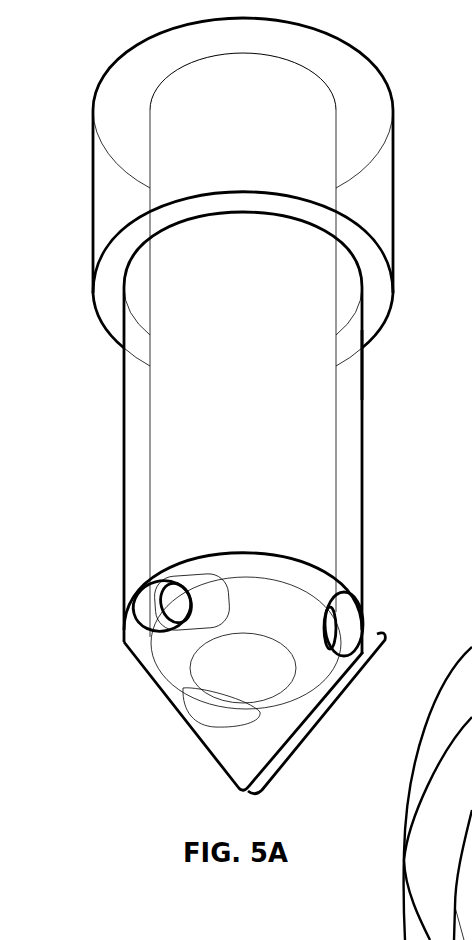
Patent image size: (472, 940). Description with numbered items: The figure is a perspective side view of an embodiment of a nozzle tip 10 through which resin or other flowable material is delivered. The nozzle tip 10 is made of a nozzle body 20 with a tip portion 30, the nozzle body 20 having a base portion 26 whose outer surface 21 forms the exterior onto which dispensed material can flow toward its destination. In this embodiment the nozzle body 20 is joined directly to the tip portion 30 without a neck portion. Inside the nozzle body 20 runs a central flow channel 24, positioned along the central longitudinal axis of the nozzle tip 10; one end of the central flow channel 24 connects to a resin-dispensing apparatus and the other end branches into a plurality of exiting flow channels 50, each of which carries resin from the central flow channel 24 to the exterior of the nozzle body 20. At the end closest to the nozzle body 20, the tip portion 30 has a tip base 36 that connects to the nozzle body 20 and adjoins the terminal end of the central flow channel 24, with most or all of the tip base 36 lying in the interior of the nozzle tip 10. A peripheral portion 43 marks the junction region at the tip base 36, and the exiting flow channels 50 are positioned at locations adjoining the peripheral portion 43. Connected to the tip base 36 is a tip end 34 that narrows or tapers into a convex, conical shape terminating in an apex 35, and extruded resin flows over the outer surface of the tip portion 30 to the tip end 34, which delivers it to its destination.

The nozzle tip 10 is at (111, 30).
The nozzle body 20 is at (92, 200).
The outer surface 21 is at (363, 370).
The central flow channel 24 is at (168, 413).
The base portion 26 is at (405, 115).
The tip portion 30 is at (135, 637).
The tip end 34 is at (330, 716).
The apex 35 is at (249, 797).
The tip base 36 is at (270, 553).
The peripheral portion 43 is at (305, 577).
The exiting flow channel 50 is at (201, 590).